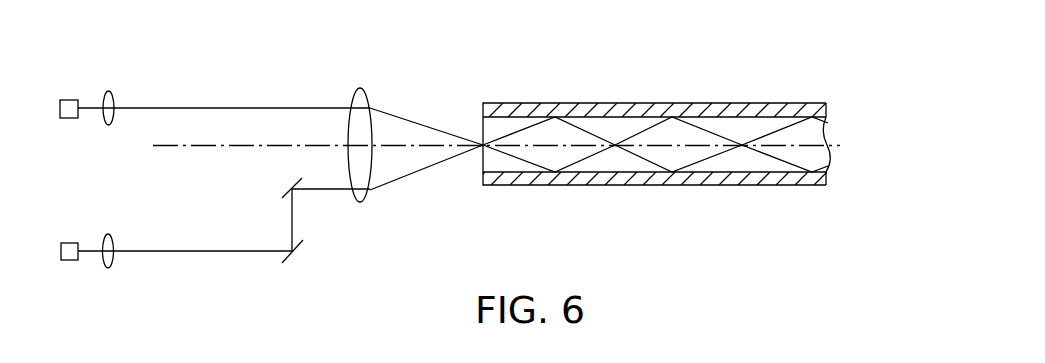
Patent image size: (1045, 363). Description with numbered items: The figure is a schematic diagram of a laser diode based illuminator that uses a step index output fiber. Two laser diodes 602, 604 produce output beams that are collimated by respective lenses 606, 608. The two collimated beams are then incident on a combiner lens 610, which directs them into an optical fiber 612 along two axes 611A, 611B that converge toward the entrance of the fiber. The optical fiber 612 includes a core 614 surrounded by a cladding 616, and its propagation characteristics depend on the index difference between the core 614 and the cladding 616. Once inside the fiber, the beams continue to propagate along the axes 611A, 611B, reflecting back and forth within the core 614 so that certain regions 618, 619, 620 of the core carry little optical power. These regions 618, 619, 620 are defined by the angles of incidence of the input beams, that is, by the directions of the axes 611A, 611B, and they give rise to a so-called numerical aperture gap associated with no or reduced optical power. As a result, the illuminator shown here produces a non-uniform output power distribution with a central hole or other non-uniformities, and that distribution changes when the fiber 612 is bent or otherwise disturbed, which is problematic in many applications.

The laser diode 602 is at (66, 99).
The laser diode 604 is at (70, 260).
The lens 606 is at (104, 126).
The lens 608 is at (110, 268).
The combiner lens 610 is at (359, 88).
The axis 611A is at (432, 127).
The axis 611B is at (427, 167).
The optical fiber 612 is at (650, 144).
The core 614 is at (737, 127).
The cladding 616 is at (641, 104).
The region 618 is at (562, 155).
The region 619 is at (672, 155).
The region 620 is at (798, 153).